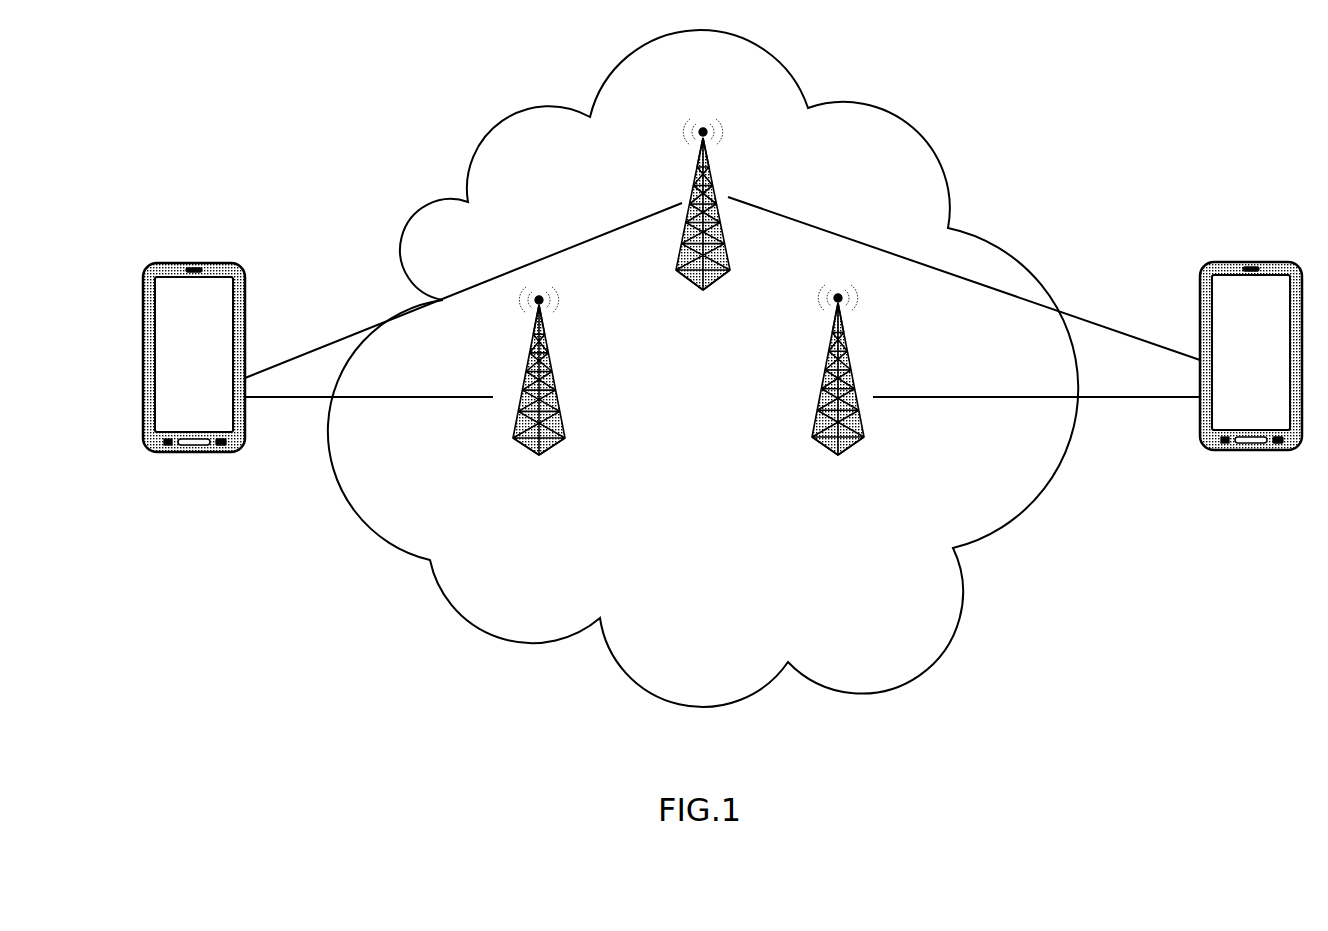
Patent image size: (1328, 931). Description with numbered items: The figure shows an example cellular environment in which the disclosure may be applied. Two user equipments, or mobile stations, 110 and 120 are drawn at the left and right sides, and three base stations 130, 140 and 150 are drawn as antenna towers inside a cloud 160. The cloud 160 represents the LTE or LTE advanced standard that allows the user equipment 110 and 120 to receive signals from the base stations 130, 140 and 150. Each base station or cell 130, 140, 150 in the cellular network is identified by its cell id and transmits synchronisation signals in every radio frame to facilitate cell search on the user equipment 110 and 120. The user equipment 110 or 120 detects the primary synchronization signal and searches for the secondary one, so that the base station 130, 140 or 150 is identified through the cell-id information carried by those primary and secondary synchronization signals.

The user equipment 110 is at (210, 454).
The user equipment 120 is at (1228, 452).
The base station 130 is at (691, 283).
The base station 140 is at (566, 420).
The base station 150 is at (815, 419).
The cloud 160 is at (434, 580).